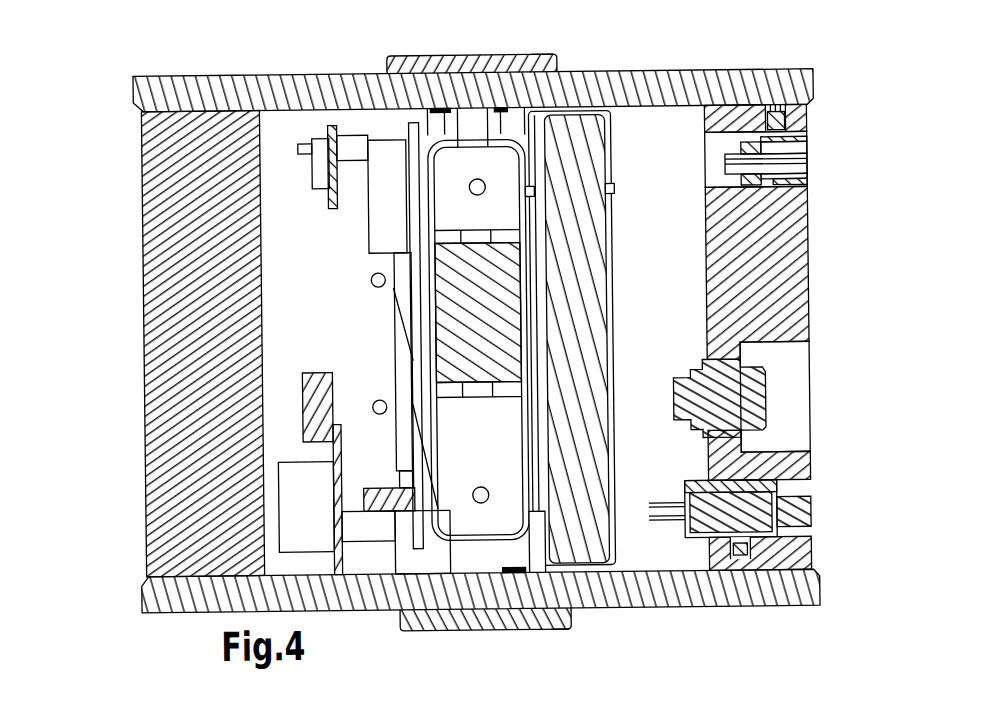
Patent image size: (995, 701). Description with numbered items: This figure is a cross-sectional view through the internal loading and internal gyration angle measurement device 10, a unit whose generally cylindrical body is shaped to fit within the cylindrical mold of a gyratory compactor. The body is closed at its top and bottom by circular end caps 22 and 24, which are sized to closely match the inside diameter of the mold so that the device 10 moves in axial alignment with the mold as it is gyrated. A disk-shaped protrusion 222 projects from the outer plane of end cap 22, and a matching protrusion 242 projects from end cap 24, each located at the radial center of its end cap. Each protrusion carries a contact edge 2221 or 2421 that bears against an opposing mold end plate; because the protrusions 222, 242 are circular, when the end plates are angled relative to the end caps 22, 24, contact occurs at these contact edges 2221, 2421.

The internal loading and internal gyration angle measurement device 10 is at (88, 108).
The end cap 22 is at (795, 91).
The protrusion 222 is at (451, 57).
The contact edge 2221 is at (550, 54).
The end cap 24 is at (802, 589).
The protrusion 242 is at (475, 618).
The contact edge 2421 is at (564, 631).